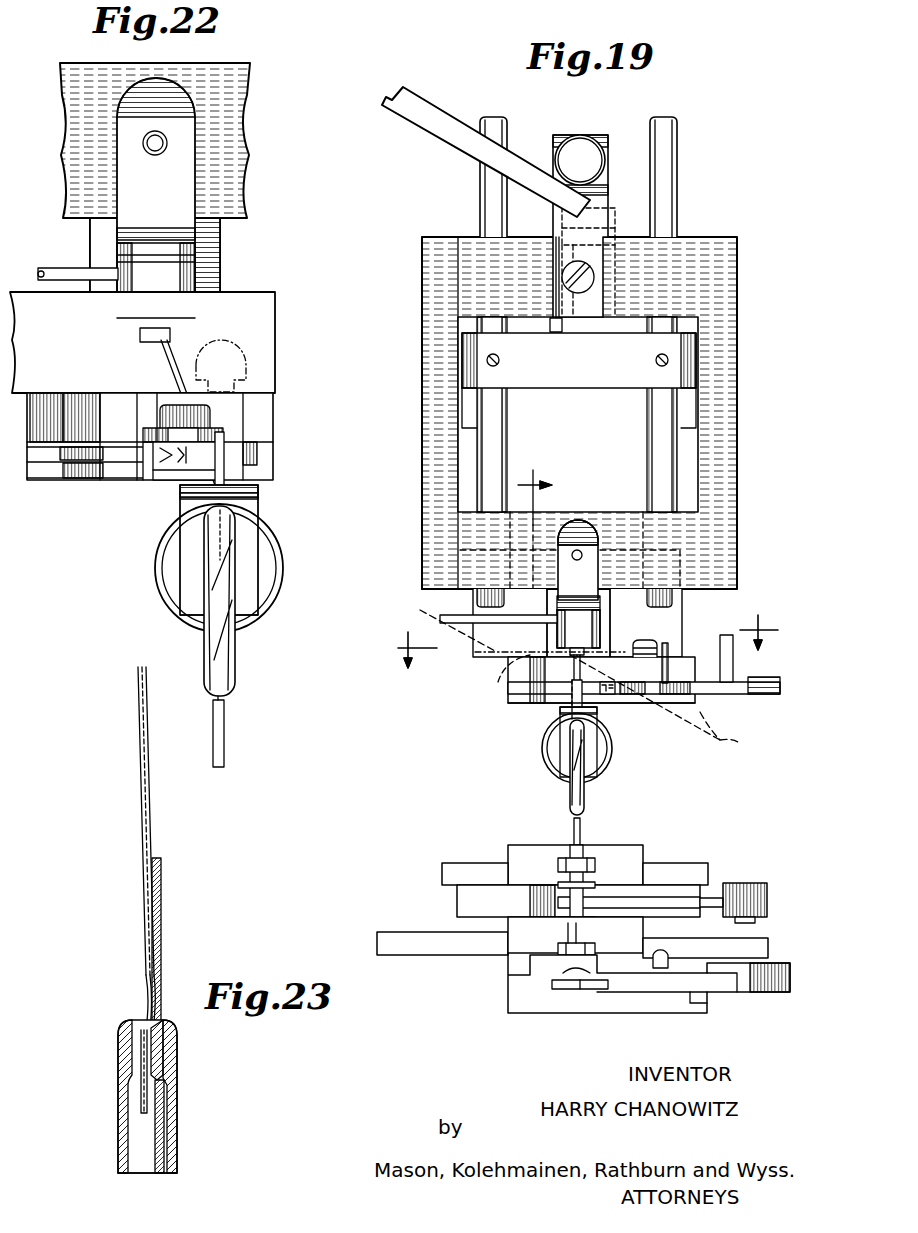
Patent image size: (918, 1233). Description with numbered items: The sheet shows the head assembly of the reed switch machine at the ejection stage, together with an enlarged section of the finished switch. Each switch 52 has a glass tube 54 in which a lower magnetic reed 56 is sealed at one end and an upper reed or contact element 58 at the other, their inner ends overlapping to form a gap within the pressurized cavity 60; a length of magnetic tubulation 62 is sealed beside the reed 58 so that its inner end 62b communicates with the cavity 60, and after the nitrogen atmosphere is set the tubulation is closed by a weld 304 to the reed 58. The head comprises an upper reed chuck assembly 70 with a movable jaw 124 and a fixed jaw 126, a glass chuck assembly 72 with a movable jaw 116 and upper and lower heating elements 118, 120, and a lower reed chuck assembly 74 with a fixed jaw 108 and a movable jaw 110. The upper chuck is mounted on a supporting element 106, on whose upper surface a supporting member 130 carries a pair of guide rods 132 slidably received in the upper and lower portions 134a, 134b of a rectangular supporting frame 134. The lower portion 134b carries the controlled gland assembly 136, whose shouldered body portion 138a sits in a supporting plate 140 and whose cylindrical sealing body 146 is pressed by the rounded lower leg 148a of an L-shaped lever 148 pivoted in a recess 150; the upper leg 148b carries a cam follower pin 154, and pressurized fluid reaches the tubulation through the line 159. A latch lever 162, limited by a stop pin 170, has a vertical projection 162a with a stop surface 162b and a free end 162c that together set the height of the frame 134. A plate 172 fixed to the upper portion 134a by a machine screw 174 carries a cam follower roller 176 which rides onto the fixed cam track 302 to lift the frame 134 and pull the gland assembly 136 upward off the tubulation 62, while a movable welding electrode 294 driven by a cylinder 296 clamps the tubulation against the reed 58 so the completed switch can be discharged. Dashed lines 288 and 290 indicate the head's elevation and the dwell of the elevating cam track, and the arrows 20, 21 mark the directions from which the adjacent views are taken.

In FIG. 19, the section line 20 is at (535, 672).
In FIG. 19, the section line 21 is at (584, 636).
In FIG. 22, the reed switch 52 is at (238, 641).
In FIG. 23, the reed switch 52 is at (108, 1144).
In FIG. 19, the reed switch 52 is at (586, 789).
In FIG. 22, the glass housing or tube 54 is at (204, 640).
In FIG. 23, the glass housing or tube 54 is at (174, 1112).
In FIG. 19, the glass housing or tube 54 is at (570, 792).
In FIG. 22, the magnetic reed 56 is at (226, 720).
In FIG. 19, the magnetic reed 56 is at (573, 828).
In FIG. 22, the second magnetic reed or contact element 58 is at (228, 440).
In FIG. 23, the second magnetic reed or contact element 58 is at (160, 898).
In FIG. 19, the second magnetic reed or contact element 58 is at (570, 700).
In FIG. 23, the cavity 60 is at (168, 1146).
In FIG. 22, the tubulation 62 is at (165, 360).
In FIG. 23, the tubulation 62 is at (142, 786).
In FIG. 19, the tubulation 62 is at (573, 686).
In FIG. 23, the inner end of tubulation 62b is at (138, 1106).
In FIG. 22, the upper reed chuck assembly 70 is at (70, 487).
In FIG. 19, the upper reed chuck assembly 70 is at (480, 726).
In FIG. 19, the glass chuck assembly 72 is at (400, 889).
In FIG. 19, the lower reed chuck assembly 74 is at (435, 987).
In FIG. 19, the supporting element 106 is at (685, 493).
In FIG. 19, the fixed jaw 108 is at (530, 1013).
In FIG. 19, the movable jaw 110 is at (630, 985).
In FIG. 19, the movable jaw 116 is at (708, 893).
In FIG. 19, the upper heating element 118 is at (575, 858).
In FIG. 19, the lower heating element 120 is at (557, 948).
In FIG. 19, the movable jaw 124 is at (760, 700).
In FIG. 22, the fixed jaw 126 is at (190, 472).
In FIG. 19, the supporting member 130 is at (470, 372).
In FIG. 19, the guide rods 132 is at (487, 185).
In FIG. 19, the supporting frame 134 is at (428, 366).
In FIG. 19, the upper portion of supporting frame 134a is at (700, 242).
In FIG. 22, the lower portion of supporting frame 134b is at (232, 70).
In FIG. 19, the lower portion of supporting frame 134b is at (605, 512).
In FIG. 22, the controlled gland assembly 136 is at (200, 283).
In FIG. 19, the controlled gland assembly 136 is at (605, 632).
In FIG. 22, the shouldered lower portion 138a is at (140, 336).
In FIG. 22, the supporting plate 140 is at (122, 322).
In FIG. 19, the supporting plate 140 is at (568, 652).
In FIG. 22, the cylindrical body 146 is at (190, 272).
In FIG. 19, the cylindrical body 146 is at (588, 625).
In FIG. 22, the L-shaped lever 148 is at (190, 173).
In FIG. 19, the L-shaped lever 148 is at (563, 568).
In FIG. 19, the rounded lower leg 148a is at (575, 600).
In FIG. 22, the upper leg 148b is at (192, 128).
In FIG. 19, the upper leg 148b is at (590, 545).
In FIG. 22, the recess 150 is at (140, 80).
In FIG. 19, the recess 150 is at (590, 500).
In FIG. 22, the cam follower pin 154 is at (168, 146).
In FIG. 19, the cam follower pin 154 is at (572, 553).
In FIG. 22, the line 159 is at (62, 265).
In FIG. 19, the line 159 is at (462, 625).
In FIG. 19, the L-shaped lever 162 is at (540, 297).
In FIG. 19, the vertically extending portion 162a is at (598, 205).
In FIG. 19, the stop surface 162b is at (594, 235).
In FIG. 19, the free end 162c is at (622, 317).
In FIG. 19, the stop pin 170 is at (548, 332).
In FIG. 19, the plate 172 is at (590, 137).
In FIG. 19, the machine screw 174 is at (592, 282).
In FIG. 19, the cam follower roller 176 is at (578, 140).
In FIG. 19, the dashed line 288 is at (720, 748).
In FIG. 19, the dashed line 290 is at (575, 665).
In FIG. 22, the movable welding electrode 294 is at (248, 485).
In FIG. 19, the movable welding electrode 294 is at (597, 716).
In FIG. 22, the cylinder 296 is at (155, 560).
In FIG. 19, the cylinder 296 is at (612, 749).
In FIG. 19, the cam track 302 is at (435, 102).
In FIG. 23, the weld 304 is at (100, 978).